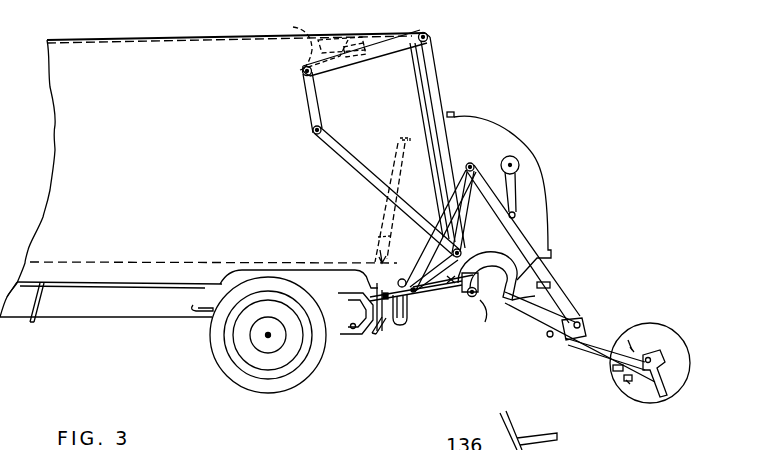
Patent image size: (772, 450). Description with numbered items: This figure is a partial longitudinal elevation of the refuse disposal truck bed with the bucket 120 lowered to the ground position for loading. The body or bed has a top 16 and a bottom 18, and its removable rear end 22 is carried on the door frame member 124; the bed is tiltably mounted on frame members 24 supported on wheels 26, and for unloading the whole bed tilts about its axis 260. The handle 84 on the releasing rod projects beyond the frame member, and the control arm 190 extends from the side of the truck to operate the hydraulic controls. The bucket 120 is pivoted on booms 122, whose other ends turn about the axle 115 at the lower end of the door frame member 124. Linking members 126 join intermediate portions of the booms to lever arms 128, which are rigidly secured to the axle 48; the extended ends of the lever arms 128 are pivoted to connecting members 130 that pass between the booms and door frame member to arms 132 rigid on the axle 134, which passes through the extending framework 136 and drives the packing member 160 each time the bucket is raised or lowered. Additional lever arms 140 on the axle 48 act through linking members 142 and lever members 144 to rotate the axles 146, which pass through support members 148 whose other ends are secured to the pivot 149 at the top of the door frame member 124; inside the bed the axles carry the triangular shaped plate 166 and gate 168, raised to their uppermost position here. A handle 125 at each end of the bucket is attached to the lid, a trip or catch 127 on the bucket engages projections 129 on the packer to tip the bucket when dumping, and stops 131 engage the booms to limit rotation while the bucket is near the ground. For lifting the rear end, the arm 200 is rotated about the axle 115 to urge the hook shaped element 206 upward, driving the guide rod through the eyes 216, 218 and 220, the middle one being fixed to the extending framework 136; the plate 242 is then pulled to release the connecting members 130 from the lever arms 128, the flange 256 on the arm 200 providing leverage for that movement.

The top 16 is at (266, 18).
The bottom 18 is at (155, 262).
The removable rear end 22 is at (410, 97).
The frame members 24 is at (151, 322).
The wheels 26 is at (227, 367).
The axle 48 is at (400, 277).
The handle 84 is at (38, 313).
The axle 115 is at (485, 311).
The bucket 120 is at (687, 355).
The booms 122 is at (590, 342).
The door frame member 124 is at (434, 68).
The handle 125 is at (668, 386).
The linking members 126 is at (558, 287).
The trip or catch 127 is at (617, 322).
The lever arms 128 is at (441, 206).
The projections 129 is at (407, 140).
The connecting members 130 is at (482, 243).
The stops 131 is at (632, 346).
The arms 132 is at (517, 193).
The axle 134 is at (528, 142).
The extending framework 136 is at (542, 216).
The lever arms 140 is at (381, 258).
The linking members 142 is at (358, 171).
The lever members 144 is at (309, 107).
The axles 146 is at (302, 73).
The support members 148 is at (386, 46).
The pivot 149 is at (426, 34).
The packing member 160 is at (378, 237).
The triangular shaped plate 166 is at (298, 28).
The gate 168 is at (336, 30).
The control arm 190 is at (379, 332).
The arm 200 is at (425, 295).
The hook shaped element 206 is at (533, 327).
The eye 216 is at (613, 370).
The eye 218 is at (463, 103).
The eye 220 is at (620, 378).
The plate 242 is at (402, 315).
The flange 256 is at (507, 437).
The axis 260 is at (352, 329).